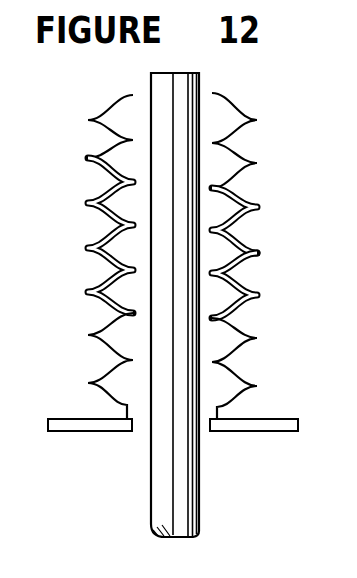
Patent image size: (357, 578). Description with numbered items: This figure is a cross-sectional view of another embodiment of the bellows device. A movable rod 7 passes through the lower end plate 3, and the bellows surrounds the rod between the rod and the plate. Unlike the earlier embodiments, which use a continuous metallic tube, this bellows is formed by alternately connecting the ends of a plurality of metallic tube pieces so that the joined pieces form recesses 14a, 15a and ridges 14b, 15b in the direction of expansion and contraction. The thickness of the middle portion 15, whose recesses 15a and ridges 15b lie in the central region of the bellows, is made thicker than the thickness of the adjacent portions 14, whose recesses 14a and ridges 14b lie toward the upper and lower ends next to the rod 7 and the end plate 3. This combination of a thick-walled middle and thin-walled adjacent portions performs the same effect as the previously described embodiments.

The movable rod 7 is at (200, 82).
The adjacent portions 14 is at (238, 150).
The middle portion 15 is at (252, 187).
The recess 15a is at (233, 226).
The ridge 15b is at (262, 256).
The recess 14a is at (240, 360).
The ridge 14b is at (262, 382).
The end plate 3 is at (268, 432).